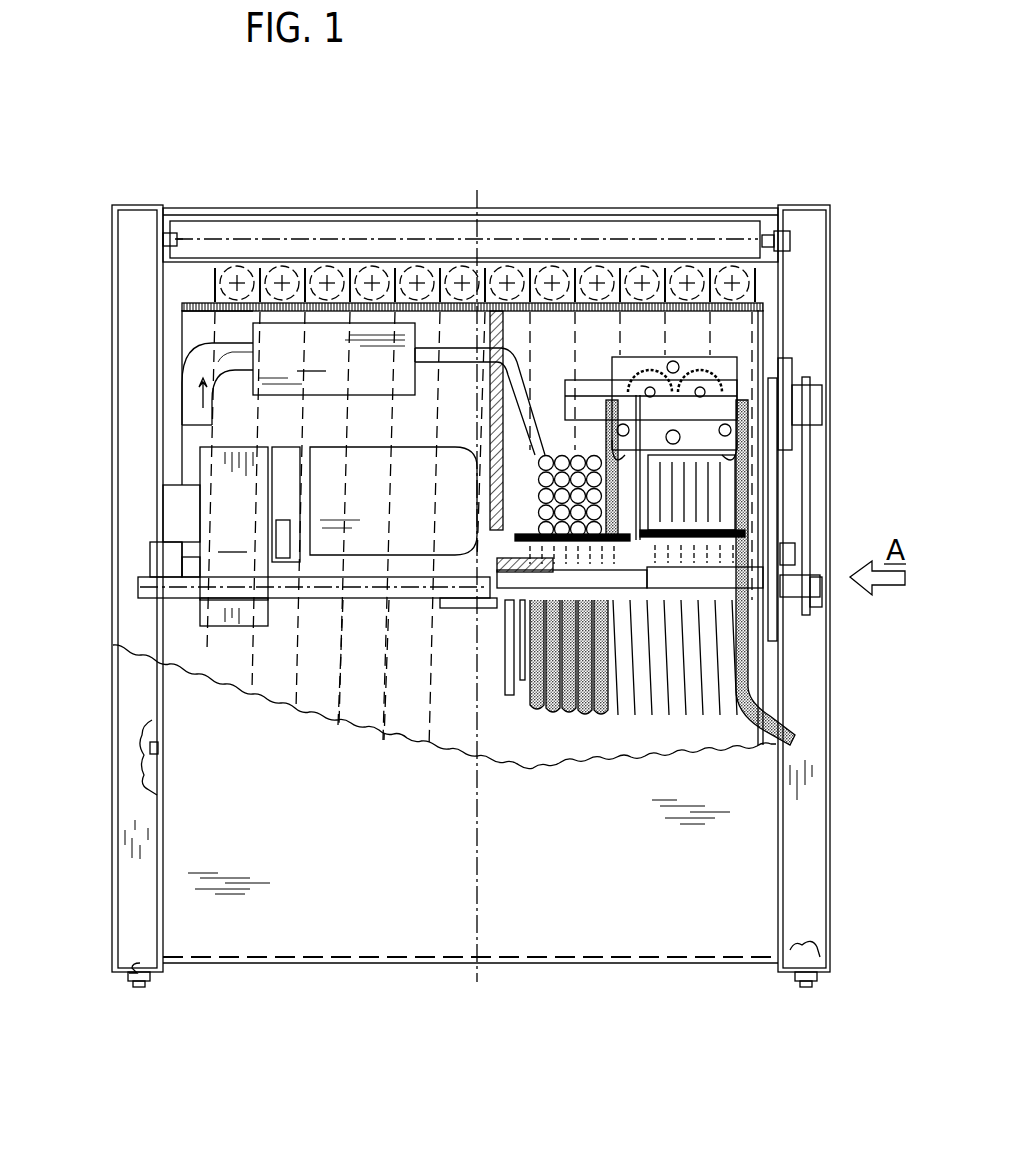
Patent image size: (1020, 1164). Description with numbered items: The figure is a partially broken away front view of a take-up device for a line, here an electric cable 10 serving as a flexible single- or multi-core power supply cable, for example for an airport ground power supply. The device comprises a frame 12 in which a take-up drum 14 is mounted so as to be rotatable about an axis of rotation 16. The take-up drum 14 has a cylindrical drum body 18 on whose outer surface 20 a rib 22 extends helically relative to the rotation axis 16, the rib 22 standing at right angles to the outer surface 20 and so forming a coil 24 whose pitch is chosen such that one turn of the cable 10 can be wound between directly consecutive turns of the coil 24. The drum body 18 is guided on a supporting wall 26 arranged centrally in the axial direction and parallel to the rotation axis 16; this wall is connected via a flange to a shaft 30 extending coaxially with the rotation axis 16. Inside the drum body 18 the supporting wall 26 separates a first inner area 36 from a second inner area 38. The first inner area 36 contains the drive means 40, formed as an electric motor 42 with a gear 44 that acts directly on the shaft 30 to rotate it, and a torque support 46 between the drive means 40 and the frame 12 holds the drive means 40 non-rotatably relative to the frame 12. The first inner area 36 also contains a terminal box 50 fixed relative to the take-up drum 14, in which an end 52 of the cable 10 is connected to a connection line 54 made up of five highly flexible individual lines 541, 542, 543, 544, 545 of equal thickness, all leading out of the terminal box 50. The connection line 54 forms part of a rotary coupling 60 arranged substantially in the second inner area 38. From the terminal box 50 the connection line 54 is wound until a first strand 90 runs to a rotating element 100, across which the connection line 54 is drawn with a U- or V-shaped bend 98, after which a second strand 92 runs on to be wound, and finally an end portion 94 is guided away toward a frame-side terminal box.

The electric cable 10 is at (233, 266).
The frame 12 is at (797, 189).
The take-up drum 14 is at (378, 290).
The axis of rotation 16 is at (383, 600).
The cylindrical drum body 18 is at (667, 315).
The outer surface 20 is at (593, 303).
The rib 22 is at (215, 275).
The coil 24 is at (302, 252).
The supporting wall 26 is at (500, 325).
The shaft 30 is at (452, 610).
The first inner area 36 is at (212, 324).
The second inner area 38 is at (708, 335).
The drive means 40 is at (306, 585).
The electric motor 42 is at (343, 556).
The gear 44 is at (250, 536).
The torque support 46 is at (175, 500).
The terminal box 50 is at (334, 359).
The end of the cable 52 is at (222, 345).
The connection line 54 is at (470, 348).
The first individual line 541 is at (540, 457).
The second individual line 542 is at (540, 473).
The third individual line 543 is at (538, 493).
The fourth individual line 544 is at (538, 506).
The fifth individual line 545 is at (538, 523).
The rotary coupling 60 is at (772, 362).
The first strand 90 is at (600, 458).
The second strand 92 is at (742, 470).
The end portion 94 is at (790, 738).
The U- or V-shaped bend 98 is at (740, 384).
The rotating element 100 is at (760, 350).